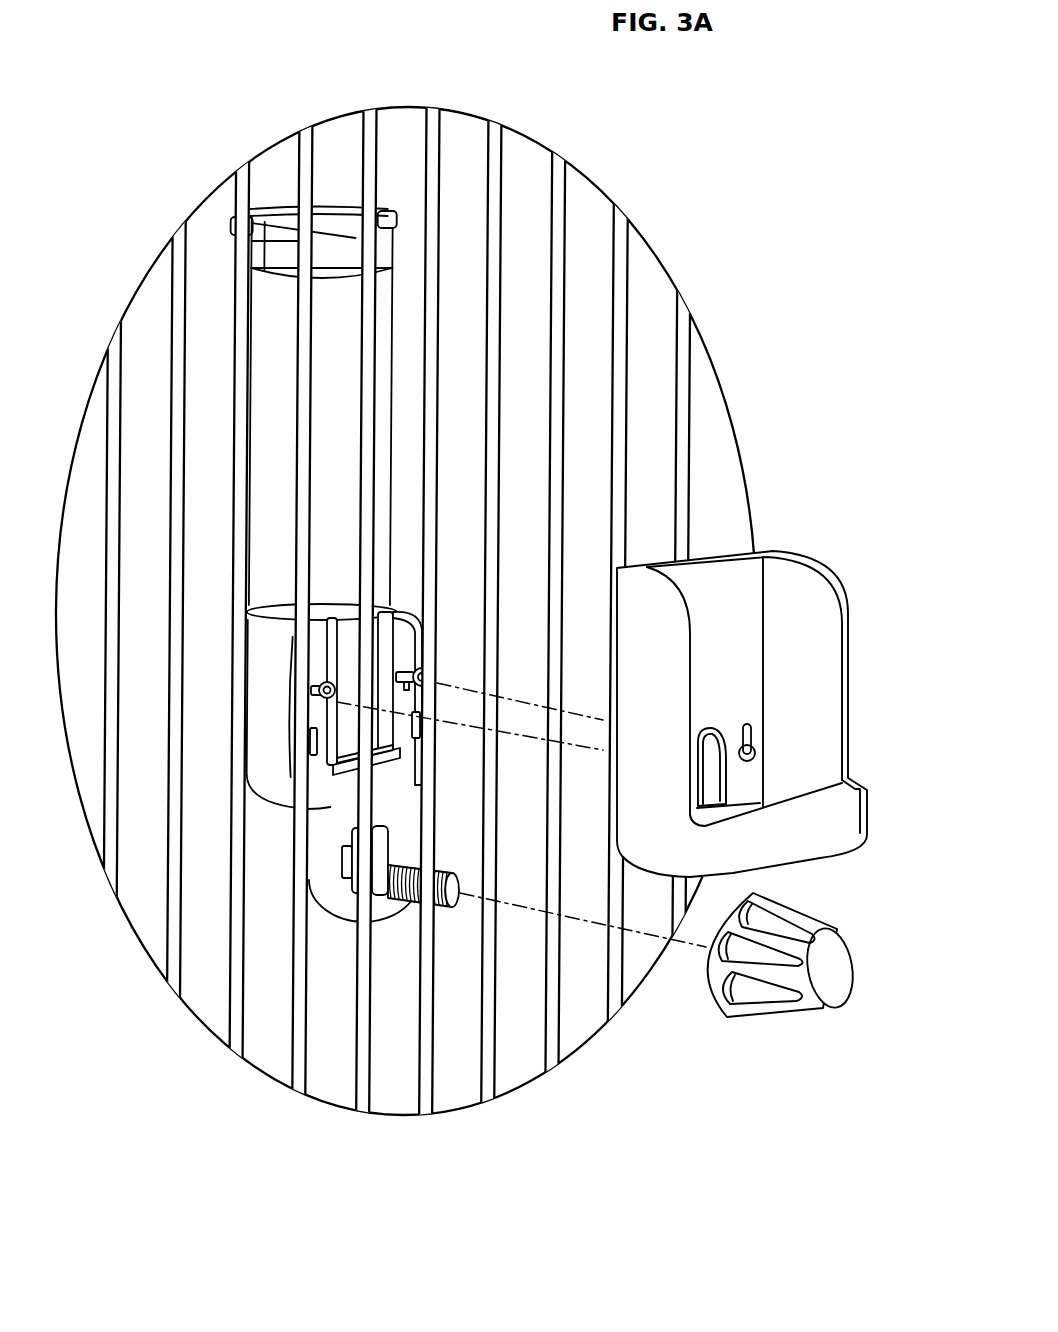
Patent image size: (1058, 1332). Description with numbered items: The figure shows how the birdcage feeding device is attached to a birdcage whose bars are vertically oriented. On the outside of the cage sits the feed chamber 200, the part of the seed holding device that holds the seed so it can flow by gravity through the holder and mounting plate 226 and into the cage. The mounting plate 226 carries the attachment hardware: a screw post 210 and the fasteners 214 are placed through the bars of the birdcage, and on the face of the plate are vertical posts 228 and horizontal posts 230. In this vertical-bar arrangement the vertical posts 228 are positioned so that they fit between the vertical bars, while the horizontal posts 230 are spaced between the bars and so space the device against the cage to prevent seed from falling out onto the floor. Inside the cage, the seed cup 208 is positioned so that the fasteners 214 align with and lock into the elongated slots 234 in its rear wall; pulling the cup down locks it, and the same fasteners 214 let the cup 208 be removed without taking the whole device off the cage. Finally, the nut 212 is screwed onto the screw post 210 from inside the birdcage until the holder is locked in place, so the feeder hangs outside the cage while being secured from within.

The feed chamber 200 is at (262, 703).
The seed cup 208 is at (802, 522).
The screw post 210 is at (422, 903).
The nut 212 is at (828, 993).
The fasteners 214 is at (332, 681).
The mounting plate 226 is at (338, 897).
The vertical posts 228 is at (418, 730).
The horizontal posts 230 is at (381, 757).
The elongated slots 234 is at (748, 751).